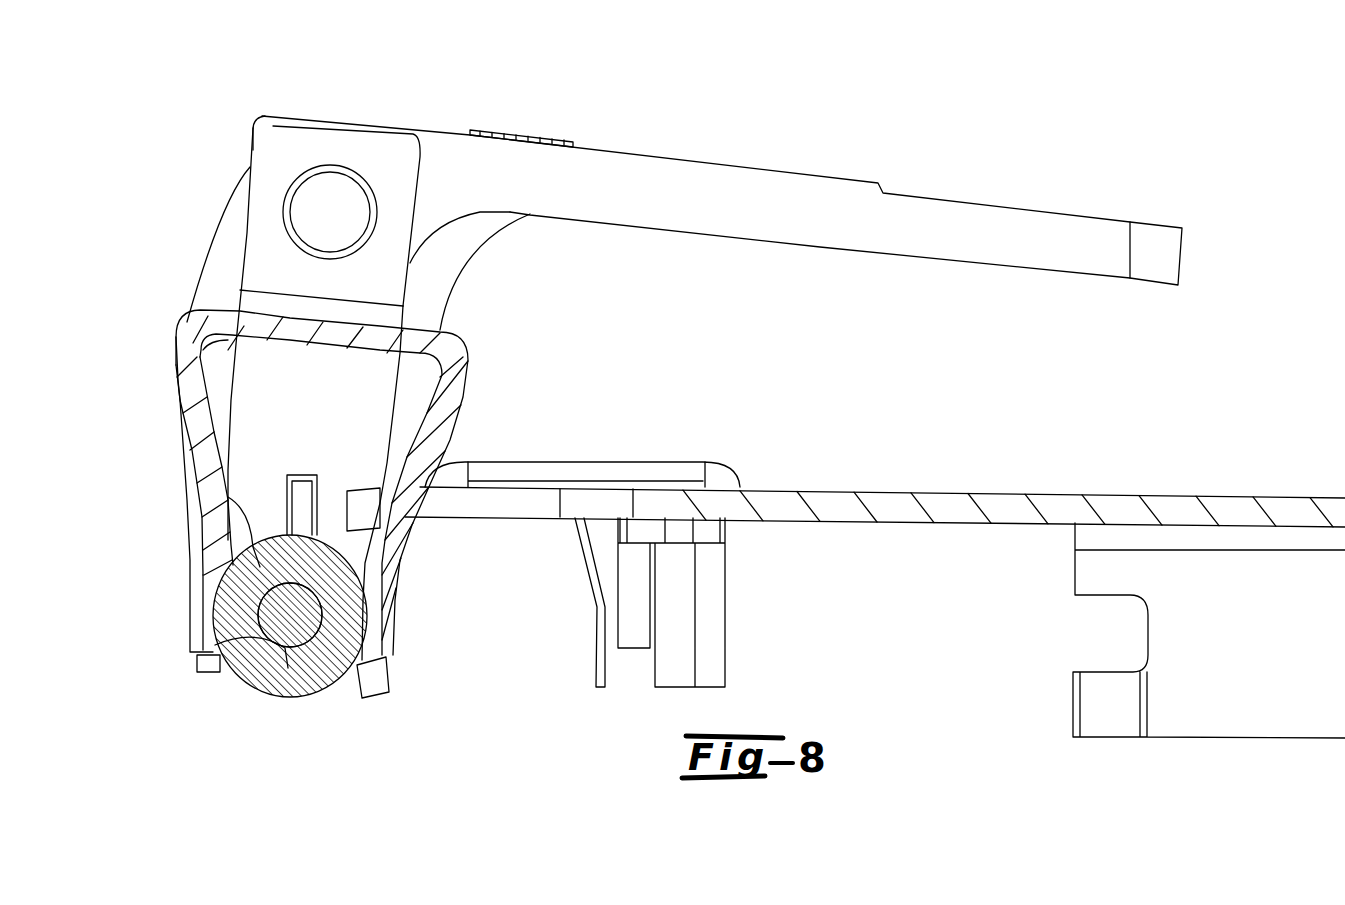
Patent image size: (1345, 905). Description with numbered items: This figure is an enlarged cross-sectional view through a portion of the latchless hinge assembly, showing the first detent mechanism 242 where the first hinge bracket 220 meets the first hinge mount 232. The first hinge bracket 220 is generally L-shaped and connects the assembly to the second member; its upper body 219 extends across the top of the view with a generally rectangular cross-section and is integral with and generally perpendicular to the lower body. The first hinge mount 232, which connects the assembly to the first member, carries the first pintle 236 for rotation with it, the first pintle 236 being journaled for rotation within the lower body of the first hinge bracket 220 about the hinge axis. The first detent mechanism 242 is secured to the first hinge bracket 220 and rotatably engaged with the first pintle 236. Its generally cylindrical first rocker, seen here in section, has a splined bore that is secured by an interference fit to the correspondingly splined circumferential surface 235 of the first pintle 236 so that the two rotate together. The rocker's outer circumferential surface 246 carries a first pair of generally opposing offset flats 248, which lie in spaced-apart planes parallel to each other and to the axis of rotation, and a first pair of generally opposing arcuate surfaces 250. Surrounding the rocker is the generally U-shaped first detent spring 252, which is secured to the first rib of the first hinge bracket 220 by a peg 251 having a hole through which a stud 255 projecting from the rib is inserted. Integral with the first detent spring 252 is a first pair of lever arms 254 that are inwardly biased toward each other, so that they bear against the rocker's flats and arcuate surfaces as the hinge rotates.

The upper body 219 is at (630, 150).
The first hinge bracket 220 is at (232, 120).
The first hinge mount 232 is at (780, 488).
The splined circumferential surface 235 is at (205, 665).
The first pintle 236 is at (287, 665).
The first detent mechanism 242 is at (160, 521).
The outer circumferential surface 246 is at (340, 694).
The offset flats 248 is at (193, 598).
The arcuate surfaces 250 is at (228, 497).
The peg 251 is at (290, 140).
The first detent spring 252 is at (463, 353).
The lever arms 254 is at (190, 548).
The stud 255 is at (325, 210).